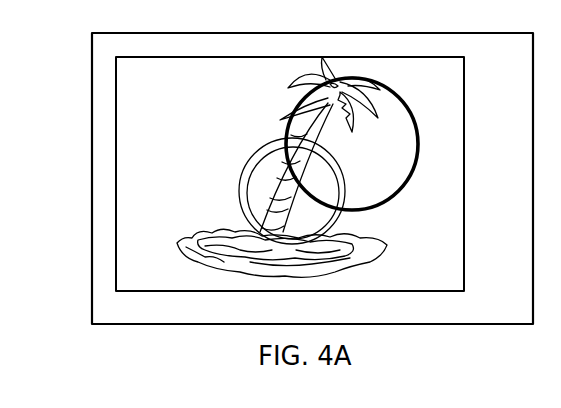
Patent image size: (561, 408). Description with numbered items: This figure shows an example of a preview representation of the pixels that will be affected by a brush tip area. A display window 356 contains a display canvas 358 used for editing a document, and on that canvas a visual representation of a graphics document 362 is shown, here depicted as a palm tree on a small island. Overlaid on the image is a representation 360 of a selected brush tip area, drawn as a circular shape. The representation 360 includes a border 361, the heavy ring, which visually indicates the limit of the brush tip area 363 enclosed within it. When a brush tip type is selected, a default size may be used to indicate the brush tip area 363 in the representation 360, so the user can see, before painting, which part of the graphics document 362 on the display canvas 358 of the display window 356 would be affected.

The display window 356 is at (92, 160).
The display canvas 358 is at (465, 205).
The representation of a selected brush tip area 360 is at (403, 146).
The border 361 is at (420, 142).
The graphics document 362 is at (283, 193).
The brush tip area 363 is at (367, 165).